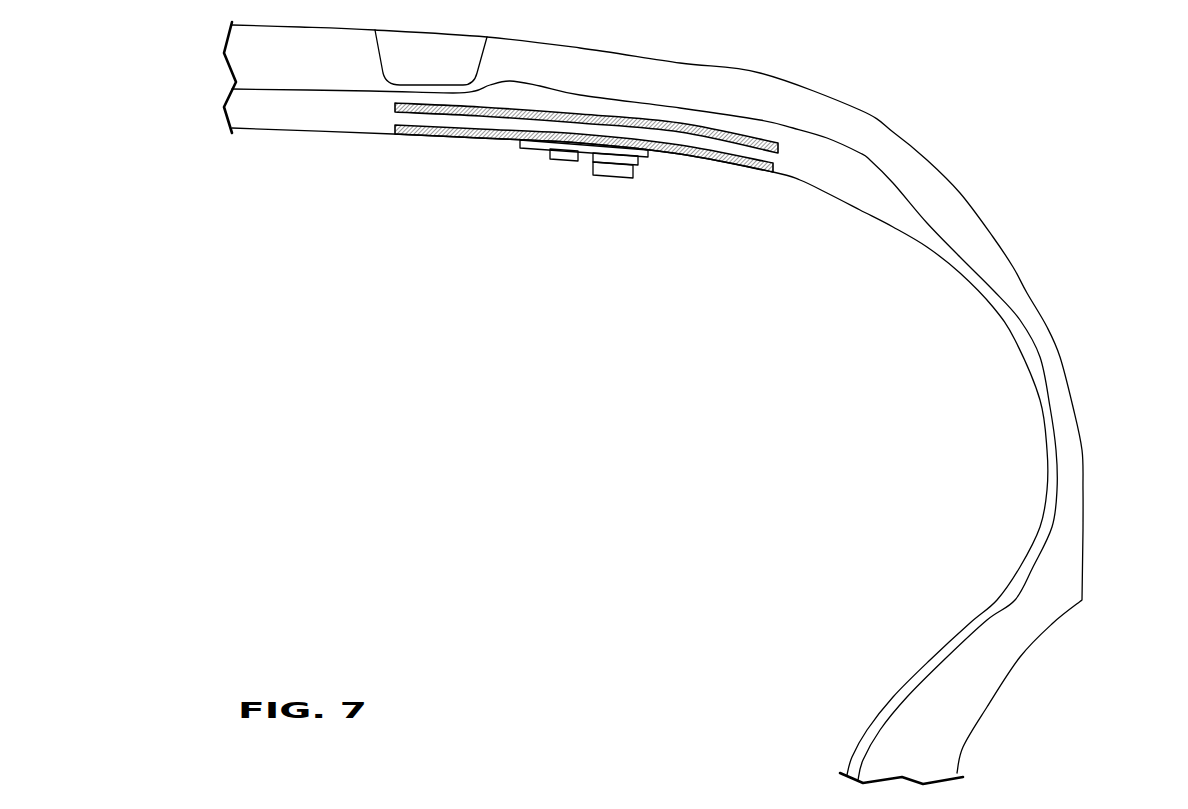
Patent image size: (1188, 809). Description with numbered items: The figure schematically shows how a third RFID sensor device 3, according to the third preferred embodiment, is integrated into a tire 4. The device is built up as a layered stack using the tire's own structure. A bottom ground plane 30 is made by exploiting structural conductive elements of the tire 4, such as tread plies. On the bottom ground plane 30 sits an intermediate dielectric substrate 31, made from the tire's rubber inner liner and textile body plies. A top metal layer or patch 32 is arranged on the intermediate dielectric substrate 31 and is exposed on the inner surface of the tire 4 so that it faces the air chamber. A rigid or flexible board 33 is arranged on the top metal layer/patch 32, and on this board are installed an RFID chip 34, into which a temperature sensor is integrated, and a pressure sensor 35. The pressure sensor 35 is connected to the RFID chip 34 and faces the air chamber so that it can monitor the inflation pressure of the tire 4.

The third RFID sensor device 3 is at (355, 227).
The tire 4 is at (698, 404).
The bottom ground plane 30 is at (546, 164).
The intermediate dielectric substrate 31 is at (439, 118).
The top metal layer or patch 32 is at (748, 160).
The rigid or flexible board 33 is at (537, 146).
The RFID chip 34 is at (566, 158).
The pressure sensor 35 is at (616, 172).